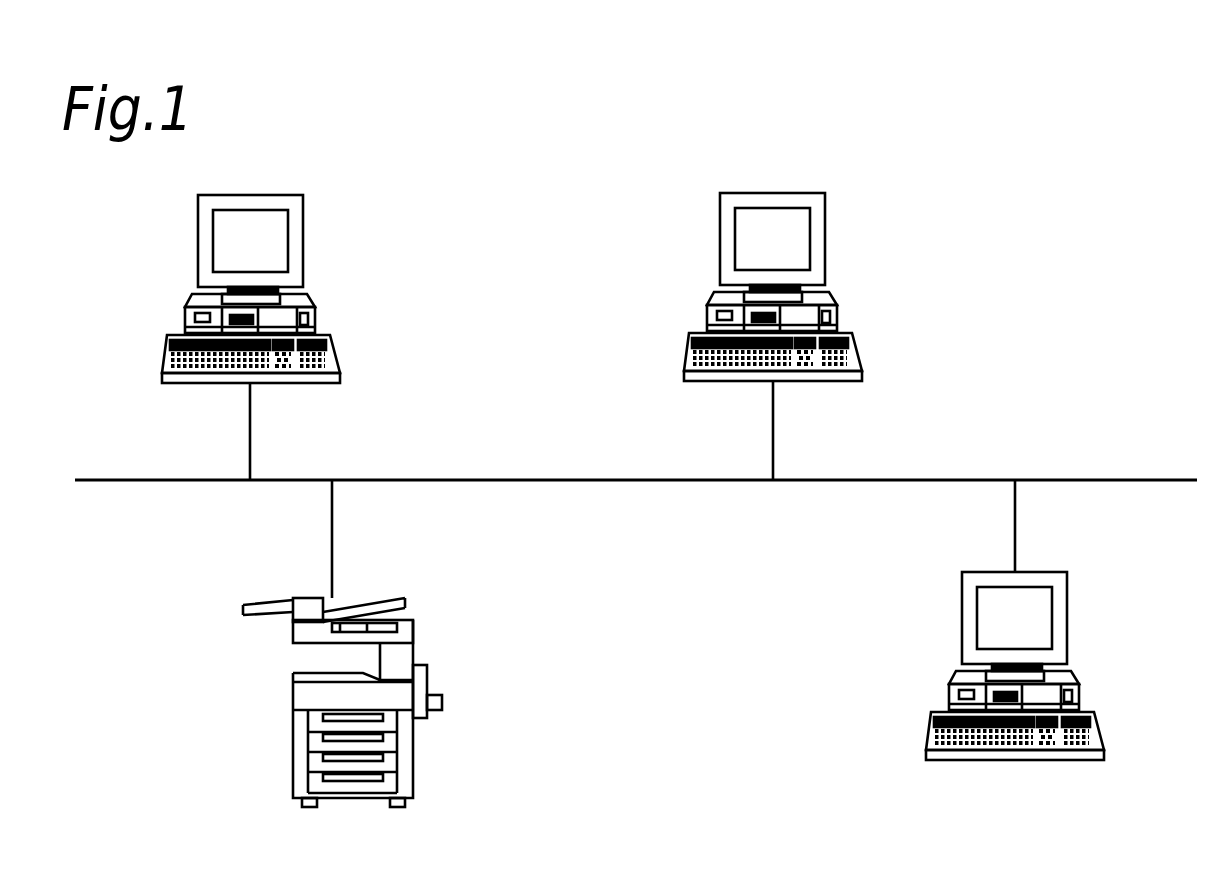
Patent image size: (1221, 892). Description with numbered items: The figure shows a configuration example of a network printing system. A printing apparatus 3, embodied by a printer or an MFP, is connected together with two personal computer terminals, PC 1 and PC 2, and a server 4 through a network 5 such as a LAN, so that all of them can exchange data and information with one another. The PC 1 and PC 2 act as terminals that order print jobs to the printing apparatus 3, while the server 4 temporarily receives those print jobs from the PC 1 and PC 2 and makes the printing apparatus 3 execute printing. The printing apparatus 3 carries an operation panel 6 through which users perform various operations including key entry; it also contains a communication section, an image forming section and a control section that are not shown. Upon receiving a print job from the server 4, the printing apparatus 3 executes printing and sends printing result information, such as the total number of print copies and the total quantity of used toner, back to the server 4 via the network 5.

The PC 1 is at (303, 238).
The PC 2 is at (826, 236).
The printing apparatus 3 is at (389, 669).
The server 4 is at (1068, 616).
The network 5 is at (1088, 479).
The operation panel 6 is at (353, 623).